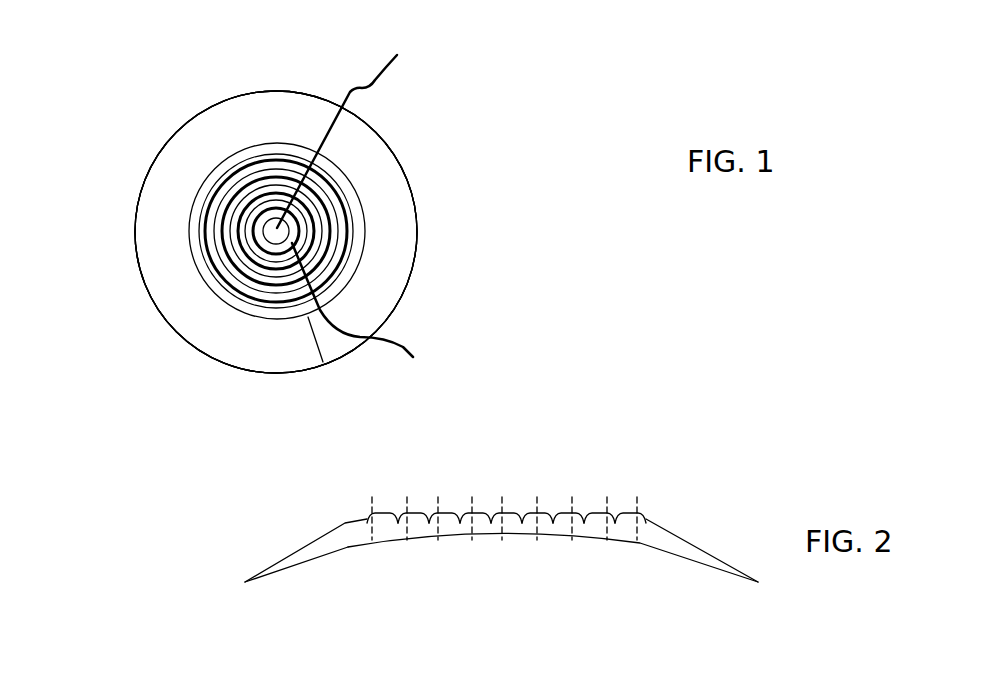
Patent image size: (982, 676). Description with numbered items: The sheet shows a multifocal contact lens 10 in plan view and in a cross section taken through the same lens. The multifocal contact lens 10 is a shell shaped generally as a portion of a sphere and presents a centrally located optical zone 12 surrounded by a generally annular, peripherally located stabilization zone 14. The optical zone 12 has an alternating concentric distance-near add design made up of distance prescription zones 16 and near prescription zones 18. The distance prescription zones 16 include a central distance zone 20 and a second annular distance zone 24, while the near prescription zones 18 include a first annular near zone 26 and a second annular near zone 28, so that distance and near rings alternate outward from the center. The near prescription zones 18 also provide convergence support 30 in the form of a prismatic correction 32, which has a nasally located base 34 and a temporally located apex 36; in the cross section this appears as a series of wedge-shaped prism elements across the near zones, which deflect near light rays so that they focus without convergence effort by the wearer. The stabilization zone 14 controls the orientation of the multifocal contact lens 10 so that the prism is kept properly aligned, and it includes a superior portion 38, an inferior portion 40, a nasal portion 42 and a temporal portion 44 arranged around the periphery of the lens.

In FIG. 1, the multifocal contact lens 10 is at (443, 112).
In FIG. 1, the optical zone 12 is at (333, 213).
In FIG. 1, the stabilization zone 14 is at (363, 305).
In FIG. 2, the stabilization zone 14 is at (703, 548).
In FIG. 1, the distance prescription zones 16 is at (356, 123).
In FIG. 1, the near prescription zones 18 is at (377, 309).
In FIG. 2, the central distance zone 20 is at (540, 523).
In FIG. 2, the second annular distance zone 24 is at (438, 513).
In FIG. 2, the first annular near zone 26 is at (465, 513).
In FIG. 2, the second annular near zone 28 is at (393, 511).
In FIG. 2, the convergence support 30 is at (398, 530).
In FIG. 2, the prismatic correction 32 is at (395, 530).
In FIG. 2, the base 34 is at (385, 517).
In FIG. 2, the apex 36 is at (416, 516).
In FIG. 1, the superior portion 38 is at (273, 100).
In FIG. 1, the inferior portion 40 is at (287, 362).
In FIG. 1, the nasal portion 42 is at (405, 218).
In FIG. 1, the temporal portion 44 is at (148, 237).